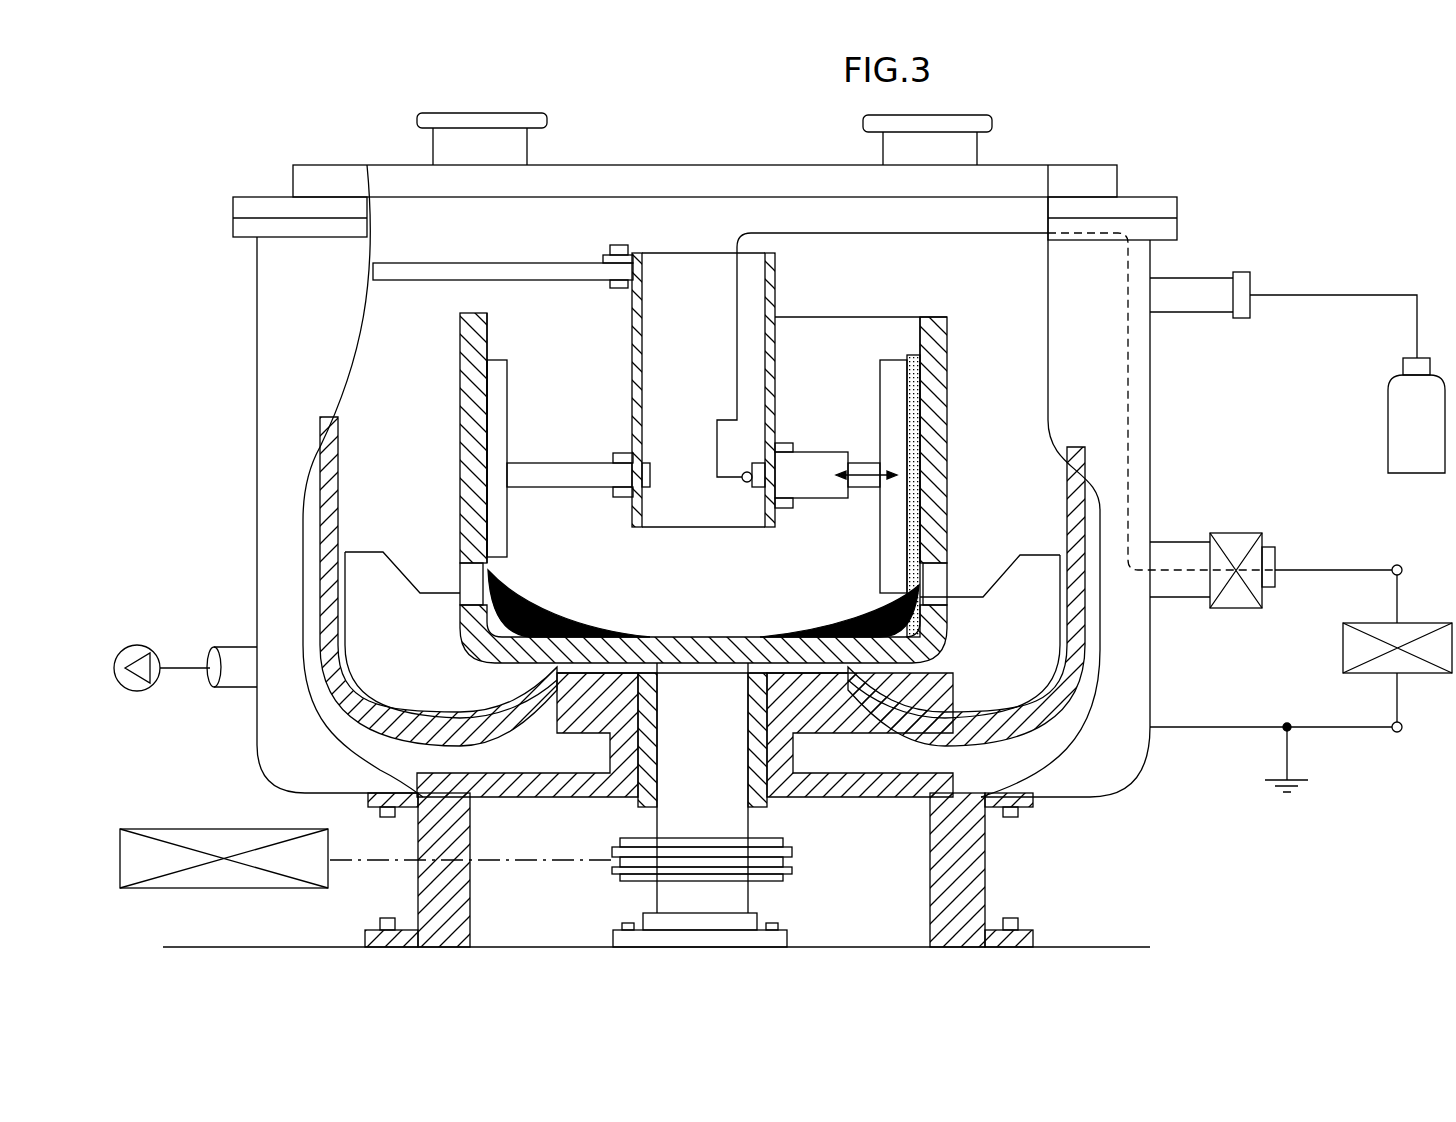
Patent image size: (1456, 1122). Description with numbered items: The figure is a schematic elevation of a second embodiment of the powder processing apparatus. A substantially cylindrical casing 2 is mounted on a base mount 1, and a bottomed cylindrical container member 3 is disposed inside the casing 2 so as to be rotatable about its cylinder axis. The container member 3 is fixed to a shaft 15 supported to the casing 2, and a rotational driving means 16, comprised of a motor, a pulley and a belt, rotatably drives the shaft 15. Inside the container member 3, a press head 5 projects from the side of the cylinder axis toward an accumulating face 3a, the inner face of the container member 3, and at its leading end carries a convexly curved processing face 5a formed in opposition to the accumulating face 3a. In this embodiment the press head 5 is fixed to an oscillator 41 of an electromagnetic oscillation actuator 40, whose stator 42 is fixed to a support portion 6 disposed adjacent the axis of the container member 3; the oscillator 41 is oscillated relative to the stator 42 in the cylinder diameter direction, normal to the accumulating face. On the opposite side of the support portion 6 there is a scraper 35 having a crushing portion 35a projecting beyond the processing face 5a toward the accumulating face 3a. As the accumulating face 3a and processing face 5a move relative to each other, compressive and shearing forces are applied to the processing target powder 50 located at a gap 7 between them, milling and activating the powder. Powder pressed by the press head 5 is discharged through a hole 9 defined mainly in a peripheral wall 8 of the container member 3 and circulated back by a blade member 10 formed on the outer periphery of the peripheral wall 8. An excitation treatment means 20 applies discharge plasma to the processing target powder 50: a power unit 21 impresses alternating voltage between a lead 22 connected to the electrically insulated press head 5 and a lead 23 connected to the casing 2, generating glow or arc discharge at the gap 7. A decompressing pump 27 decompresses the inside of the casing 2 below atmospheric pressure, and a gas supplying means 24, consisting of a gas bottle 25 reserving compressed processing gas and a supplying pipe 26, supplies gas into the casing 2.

The base mount 1 is at (965, 868).
The casing 2 is at (1157, 466).
The container member 3 is at (952, 357).
The accumulating face 3a is at (489, 380).
The press head 5 is at (893, 378).
The processing face 5a is at (913, 397).
The support portion 6 is at (777, 272).
The gap 7 is at (915, 357).
The peripheral wall 8 is at (475, 372).
The hole 9 is at (462, 580).
The blade member 10 is at (368, 592).
The shaft 15 is at (735, 822).
The rotational driving means 16 is at (235, 829).
The excitation treatment means 20 is at (1328, 552).
The power unit 21 is at (1420, 675).
The lead 22 is at (1310, 573).
The lead 23 is at (1222, 730).
The gas supplying means 24 is at (1405, 268).
The gas bottle 25 is at (1415, 430).
The supplying pipe 26 is at (1328, 293).
The decompressing pump 27 is at (137, 693).
The scraper 35 is at (500, 432).
The crushing portion 35a is at (485, 462).
The electromagnetic oscillation actuator 40 is at (812, 447).
The oscillator 41 is at (868, 463).
The stator 42 is at (820, 497).
The processing target powder 50 is at (520, 607).